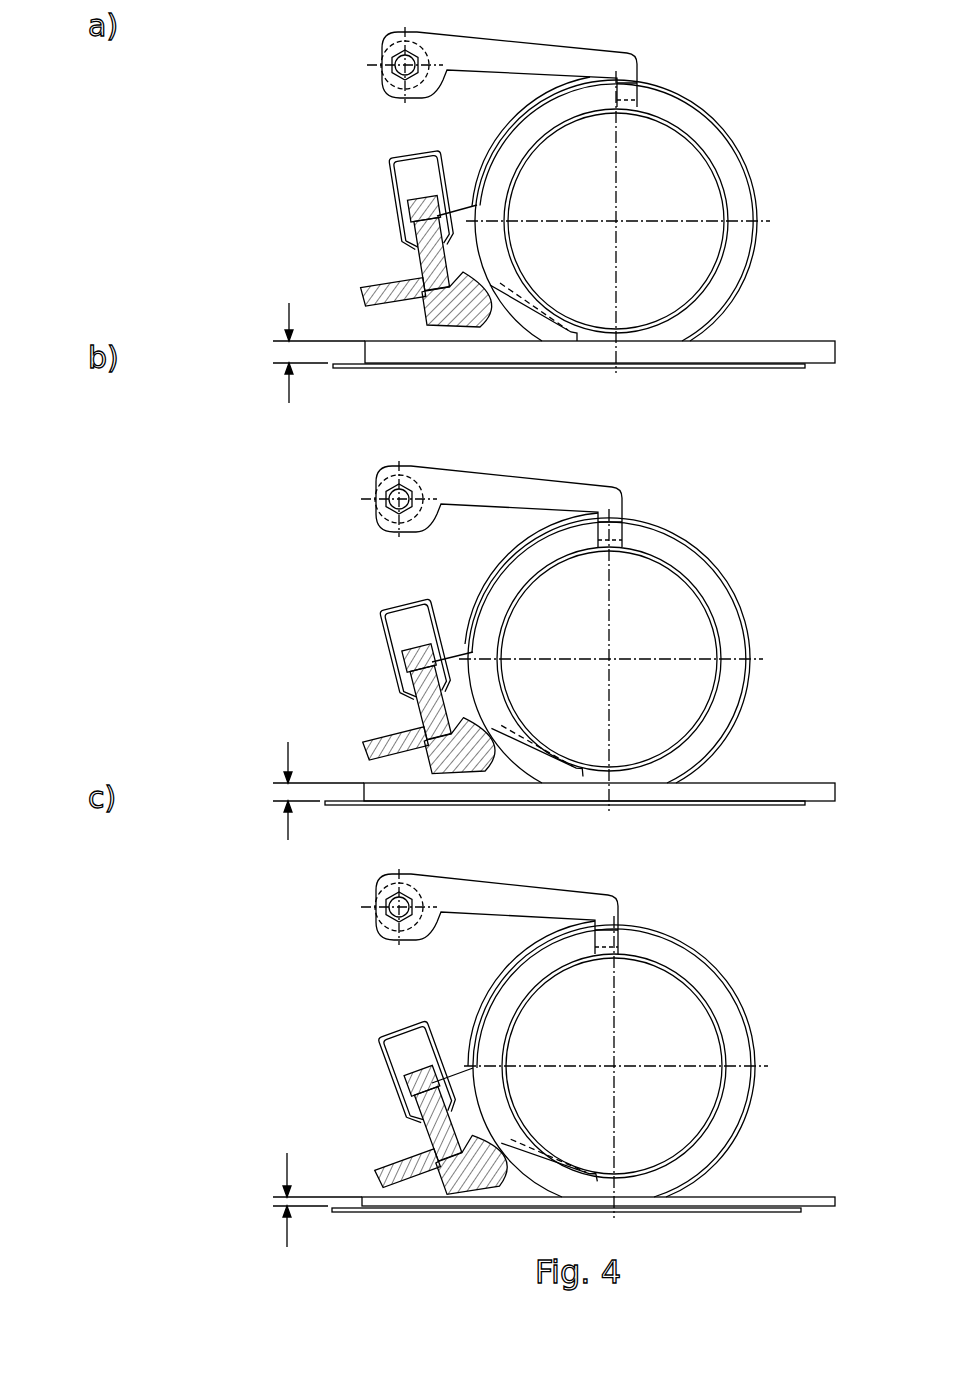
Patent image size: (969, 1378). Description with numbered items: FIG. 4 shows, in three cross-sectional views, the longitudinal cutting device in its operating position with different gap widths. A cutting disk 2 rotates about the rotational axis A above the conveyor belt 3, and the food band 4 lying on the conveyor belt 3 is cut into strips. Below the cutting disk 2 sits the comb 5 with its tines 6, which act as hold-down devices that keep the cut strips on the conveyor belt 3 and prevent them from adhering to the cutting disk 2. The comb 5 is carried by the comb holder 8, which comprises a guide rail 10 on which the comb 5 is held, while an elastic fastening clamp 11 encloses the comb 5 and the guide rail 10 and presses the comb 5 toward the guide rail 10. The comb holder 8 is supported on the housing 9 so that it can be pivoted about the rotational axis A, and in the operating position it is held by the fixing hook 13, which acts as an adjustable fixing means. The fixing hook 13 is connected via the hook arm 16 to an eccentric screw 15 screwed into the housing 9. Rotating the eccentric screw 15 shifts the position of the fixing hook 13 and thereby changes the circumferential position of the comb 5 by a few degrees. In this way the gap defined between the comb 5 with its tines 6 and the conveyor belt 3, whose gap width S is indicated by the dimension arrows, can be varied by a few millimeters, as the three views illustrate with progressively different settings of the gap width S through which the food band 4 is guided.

The cutting disk 2 is at (730, 272).
The conveyor belt 3 is at (779, 364).
The food band 4 is at (823, 358).
The comb 5 is at (410, 270).
The tines 6 is at (498, 280).
The comb holder 8 is at (366, 216).
The housing 9 is at (466, 121).
The guide rail 10 is at (375, 742).
The fastening clamp 11 is at (385, 195).
The fixing hook 13 is at (365, 15).
The eccentric screw 15 is at (378, 66).
The hook arm 16 is at (573, 56).
The rotational axis A is at (615, 221).
The gap width S is at (288, 312).